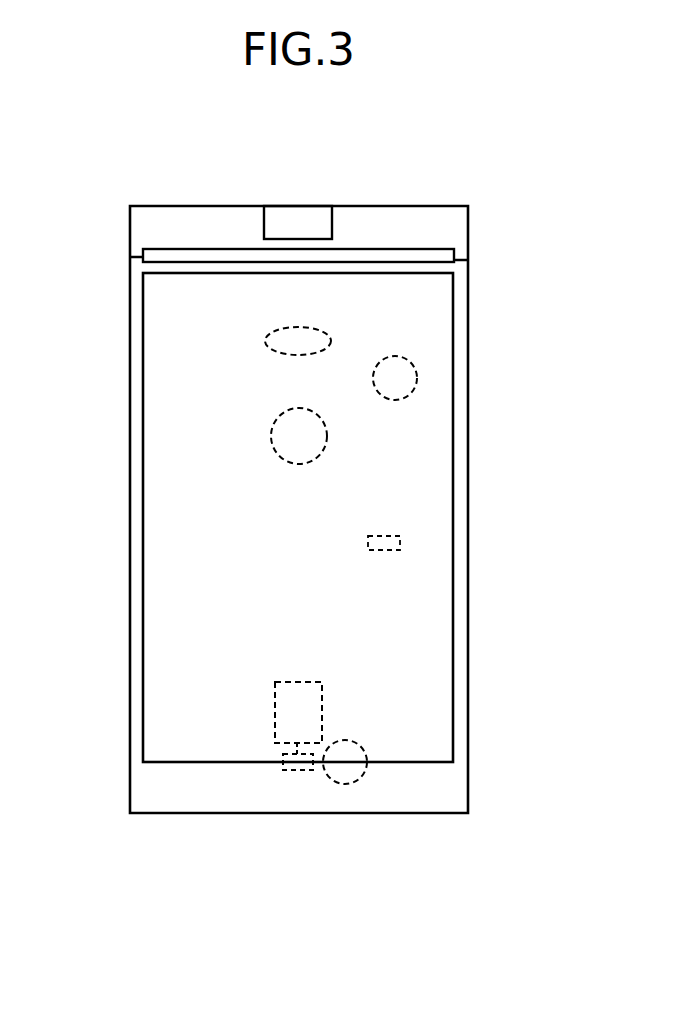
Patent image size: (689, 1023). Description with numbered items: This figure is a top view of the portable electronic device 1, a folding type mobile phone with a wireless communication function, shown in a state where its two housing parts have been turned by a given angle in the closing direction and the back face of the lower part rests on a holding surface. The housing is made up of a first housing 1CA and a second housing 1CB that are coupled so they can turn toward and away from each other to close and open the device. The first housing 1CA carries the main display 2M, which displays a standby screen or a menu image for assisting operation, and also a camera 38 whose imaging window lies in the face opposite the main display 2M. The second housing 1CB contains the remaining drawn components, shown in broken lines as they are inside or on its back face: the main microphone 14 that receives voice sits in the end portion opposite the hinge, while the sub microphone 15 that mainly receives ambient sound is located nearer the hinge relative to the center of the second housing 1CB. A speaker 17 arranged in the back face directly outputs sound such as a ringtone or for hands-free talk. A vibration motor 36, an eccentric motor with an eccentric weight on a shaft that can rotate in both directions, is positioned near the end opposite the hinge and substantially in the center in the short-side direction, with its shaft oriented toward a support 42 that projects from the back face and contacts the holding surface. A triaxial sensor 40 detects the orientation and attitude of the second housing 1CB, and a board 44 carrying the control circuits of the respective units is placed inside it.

The portable electronic device 1 is at (170, 172).
The first housing 1CA is at (468, 223).
The second housing 1CB is at (468, 340).
The main display 2M is at (155, 255).
The camera 38 is at (298, 222).
The board 44 is at (453, 603).
The support 42 is at (298, 341).
The speaker 17 is at (395, 378).
The sub microphone 15 is at (299, 436).
The triaxial sensor 40 is at (400, 543).
The vibration motor 36 is at (295, 716).
The main microphone 14 is at (345, 770).